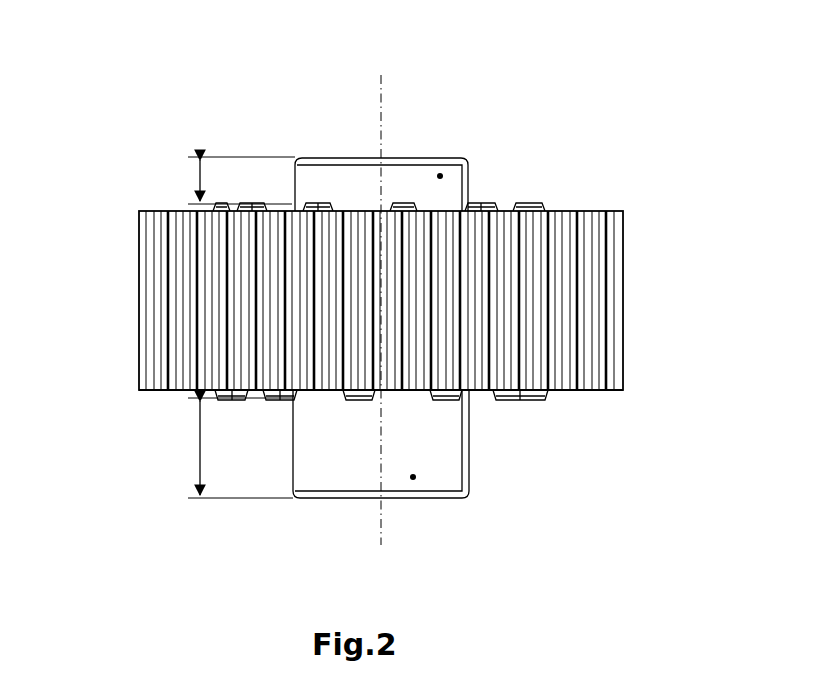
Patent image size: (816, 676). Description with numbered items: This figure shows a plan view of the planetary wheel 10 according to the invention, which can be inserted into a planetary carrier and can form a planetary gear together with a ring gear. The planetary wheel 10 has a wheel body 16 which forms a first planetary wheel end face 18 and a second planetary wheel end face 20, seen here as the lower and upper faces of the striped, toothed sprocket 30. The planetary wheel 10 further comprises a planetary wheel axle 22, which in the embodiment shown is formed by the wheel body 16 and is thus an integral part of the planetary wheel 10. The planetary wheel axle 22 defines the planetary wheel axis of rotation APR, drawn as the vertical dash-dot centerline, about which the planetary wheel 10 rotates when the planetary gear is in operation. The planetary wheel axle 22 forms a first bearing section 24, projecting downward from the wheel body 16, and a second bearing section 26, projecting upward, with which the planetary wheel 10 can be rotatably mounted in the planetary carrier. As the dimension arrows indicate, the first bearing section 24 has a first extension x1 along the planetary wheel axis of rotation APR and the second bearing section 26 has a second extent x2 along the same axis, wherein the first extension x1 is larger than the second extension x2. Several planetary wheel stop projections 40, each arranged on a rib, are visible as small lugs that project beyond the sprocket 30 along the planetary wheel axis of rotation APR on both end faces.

The planetary wheel 10 is at (103, 130).
The wheel body 16 is at (439, 306).
The first planetary wheel end face 18 is at (595, 391).
The second planetary wheel end face 20 is at (580, 210).
The planetary wheel axle 22 is at (440, 173).
The first bearing section 24 is at (413, 480).
The second bearing section 26 is at (398, 145).
The sprocket 30 is at (392, 306).
The planetary wheel stop projection 40 is at (522, 205).
The planetary wheel axis of rotation APR is at (378, 110).
The first extension x1 is at (230, 448).
The second extension x2 is at (231, 180).